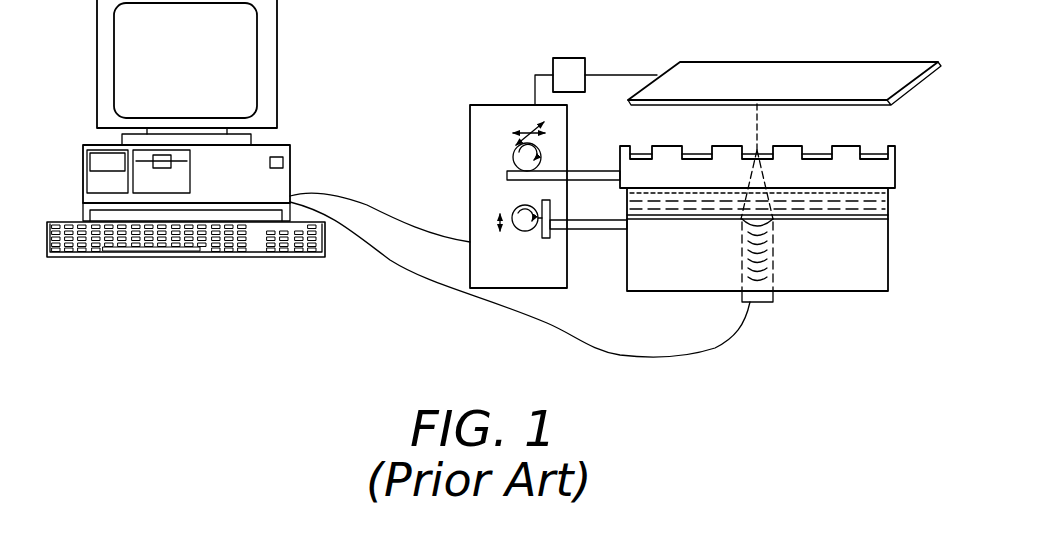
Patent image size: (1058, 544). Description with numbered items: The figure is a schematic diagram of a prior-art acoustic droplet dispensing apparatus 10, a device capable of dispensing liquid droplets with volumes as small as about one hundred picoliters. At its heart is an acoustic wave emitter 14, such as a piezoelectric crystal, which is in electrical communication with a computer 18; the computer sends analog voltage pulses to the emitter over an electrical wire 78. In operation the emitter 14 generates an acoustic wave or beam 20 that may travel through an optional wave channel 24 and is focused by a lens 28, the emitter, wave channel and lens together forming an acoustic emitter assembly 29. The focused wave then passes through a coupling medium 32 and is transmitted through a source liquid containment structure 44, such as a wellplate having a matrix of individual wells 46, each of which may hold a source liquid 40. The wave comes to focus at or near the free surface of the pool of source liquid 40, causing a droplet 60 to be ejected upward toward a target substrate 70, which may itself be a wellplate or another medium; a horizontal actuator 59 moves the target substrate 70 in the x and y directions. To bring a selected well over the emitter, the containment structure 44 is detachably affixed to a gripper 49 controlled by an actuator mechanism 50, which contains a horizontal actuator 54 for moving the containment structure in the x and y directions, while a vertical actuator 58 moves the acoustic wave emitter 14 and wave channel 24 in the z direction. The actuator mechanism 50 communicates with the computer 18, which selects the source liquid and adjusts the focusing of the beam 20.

The acoustic droplet dispensing apparatus 10 is at (857, 306).
The acoustic wave emitter 14 is at (764, 303).
The computer 18 is at (302, 156).
The acoustic wave or beam 20 is at (763, 250).
The wave channel 24 is at (668, 280).
The lens 28 is at (744, 227).
The acoustic emitter assembly 29 is at (894, 257).
The coupling medium 32 is at (890, 207).
The source liquid 40 is at (766, 150).
The source liquid containment structure 44 is at (896, 184).
The wells 46 is at (697, 157).
The gripper 49 is at (613, 170).
The actuator mechanism 50 is at (490, 105).
The horizontal actuator 54 is at (513, 157).
The vertical actuator 58 is at (515, 212).
The horizontal actuator 59 is at (567, 58).
The droplet 60 is at (756, 140).
The target substrate 70 is at (849, 62).
The electrical wire 78 is at (584, 360).